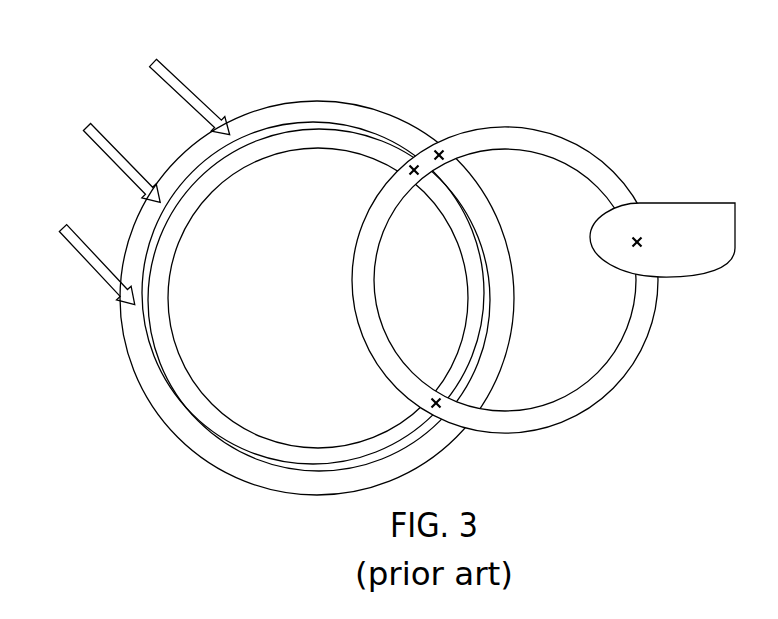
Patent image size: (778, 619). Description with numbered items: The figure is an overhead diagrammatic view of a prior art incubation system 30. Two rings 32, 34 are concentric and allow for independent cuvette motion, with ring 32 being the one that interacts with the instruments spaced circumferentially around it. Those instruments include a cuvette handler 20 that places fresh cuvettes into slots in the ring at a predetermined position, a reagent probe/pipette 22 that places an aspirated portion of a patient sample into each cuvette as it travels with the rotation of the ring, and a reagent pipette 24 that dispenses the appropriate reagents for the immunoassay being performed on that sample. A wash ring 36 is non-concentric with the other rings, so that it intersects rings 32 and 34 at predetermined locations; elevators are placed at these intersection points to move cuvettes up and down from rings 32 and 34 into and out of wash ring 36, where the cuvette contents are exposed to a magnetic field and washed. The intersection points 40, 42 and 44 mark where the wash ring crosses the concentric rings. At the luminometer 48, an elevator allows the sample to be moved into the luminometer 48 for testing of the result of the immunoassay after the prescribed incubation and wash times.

The cuvette handler 20 is at (86, 255).
The reagent probe/pipette 22 is at (117, 147).
The reagent pipette 24 is at (186, 84).
The system 30 is at (318, 298).
The ring 32 is at (341, 110).
The ring 34 is at (194, 392).
The wash ring 36 is at (528, 134).
The connection point 40 is at (440, 149).
The connection point 42 is at (409, 171).
The connection point 44 is at (430, 403).
The luminometer 48 is at (662, 240).